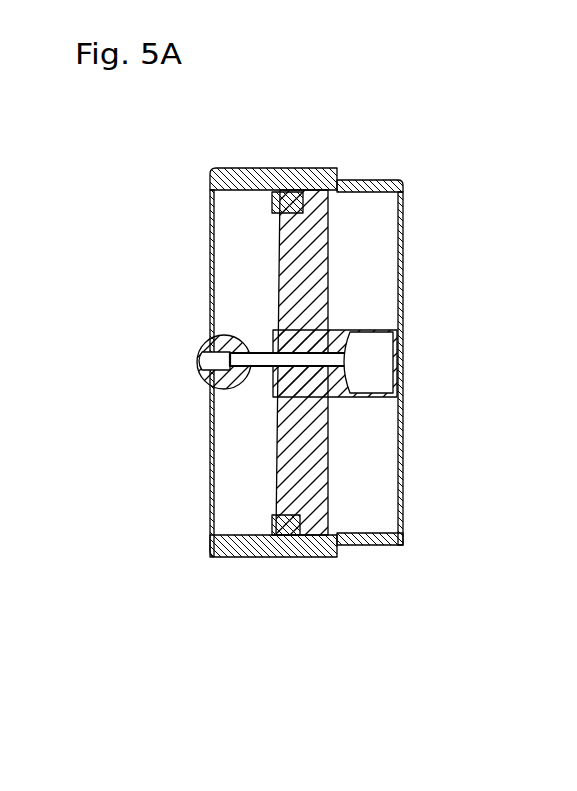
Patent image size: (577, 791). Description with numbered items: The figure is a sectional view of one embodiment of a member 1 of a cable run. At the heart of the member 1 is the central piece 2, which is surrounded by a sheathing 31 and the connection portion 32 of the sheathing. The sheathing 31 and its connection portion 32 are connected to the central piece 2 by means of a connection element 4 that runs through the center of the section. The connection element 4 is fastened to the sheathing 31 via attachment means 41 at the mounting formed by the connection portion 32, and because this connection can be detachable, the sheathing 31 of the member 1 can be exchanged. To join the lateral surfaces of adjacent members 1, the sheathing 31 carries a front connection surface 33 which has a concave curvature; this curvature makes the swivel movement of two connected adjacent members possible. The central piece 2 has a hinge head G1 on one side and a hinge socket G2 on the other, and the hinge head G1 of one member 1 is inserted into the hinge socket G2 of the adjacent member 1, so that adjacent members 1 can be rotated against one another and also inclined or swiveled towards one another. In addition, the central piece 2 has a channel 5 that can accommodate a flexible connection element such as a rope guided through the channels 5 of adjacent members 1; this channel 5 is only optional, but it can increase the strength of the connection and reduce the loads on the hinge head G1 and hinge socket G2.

The member 1 is at (241, 392).
The central piece 2 is at (238, 318).
The sheathing 31 is at (282, 162).
The connection portion of the sheathing 32 is at (360, 180).
The front connection surface 33 is at (212, 187).
The connection element 4 is at (333, 232).
The attachment means 41 is at (285, 543).
The channel 5 is at (227, 393).
The hinge head G1 is at (198, 383).
The hinge socket G2 is at (362, 352).